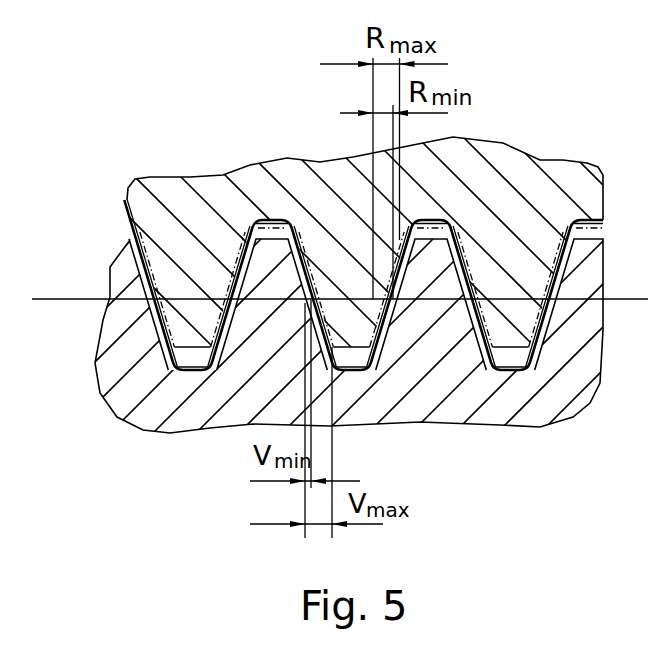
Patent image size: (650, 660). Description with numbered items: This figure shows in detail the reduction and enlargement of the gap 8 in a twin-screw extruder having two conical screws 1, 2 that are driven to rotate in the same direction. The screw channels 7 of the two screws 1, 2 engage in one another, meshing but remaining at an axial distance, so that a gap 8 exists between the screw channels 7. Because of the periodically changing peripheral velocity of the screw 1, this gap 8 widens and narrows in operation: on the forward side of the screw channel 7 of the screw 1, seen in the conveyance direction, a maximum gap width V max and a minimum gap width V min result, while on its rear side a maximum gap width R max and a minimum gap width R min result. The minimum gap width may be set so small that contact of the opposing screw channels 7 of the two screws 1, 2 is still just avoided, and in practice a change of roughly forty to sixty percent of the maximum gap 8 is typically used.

The conical screw 1 is at (172, 215).
The conical screw 2 is at (542, 398).
The screw channel 7 is at (203, 292).
The gap 8 is at (228, 232).